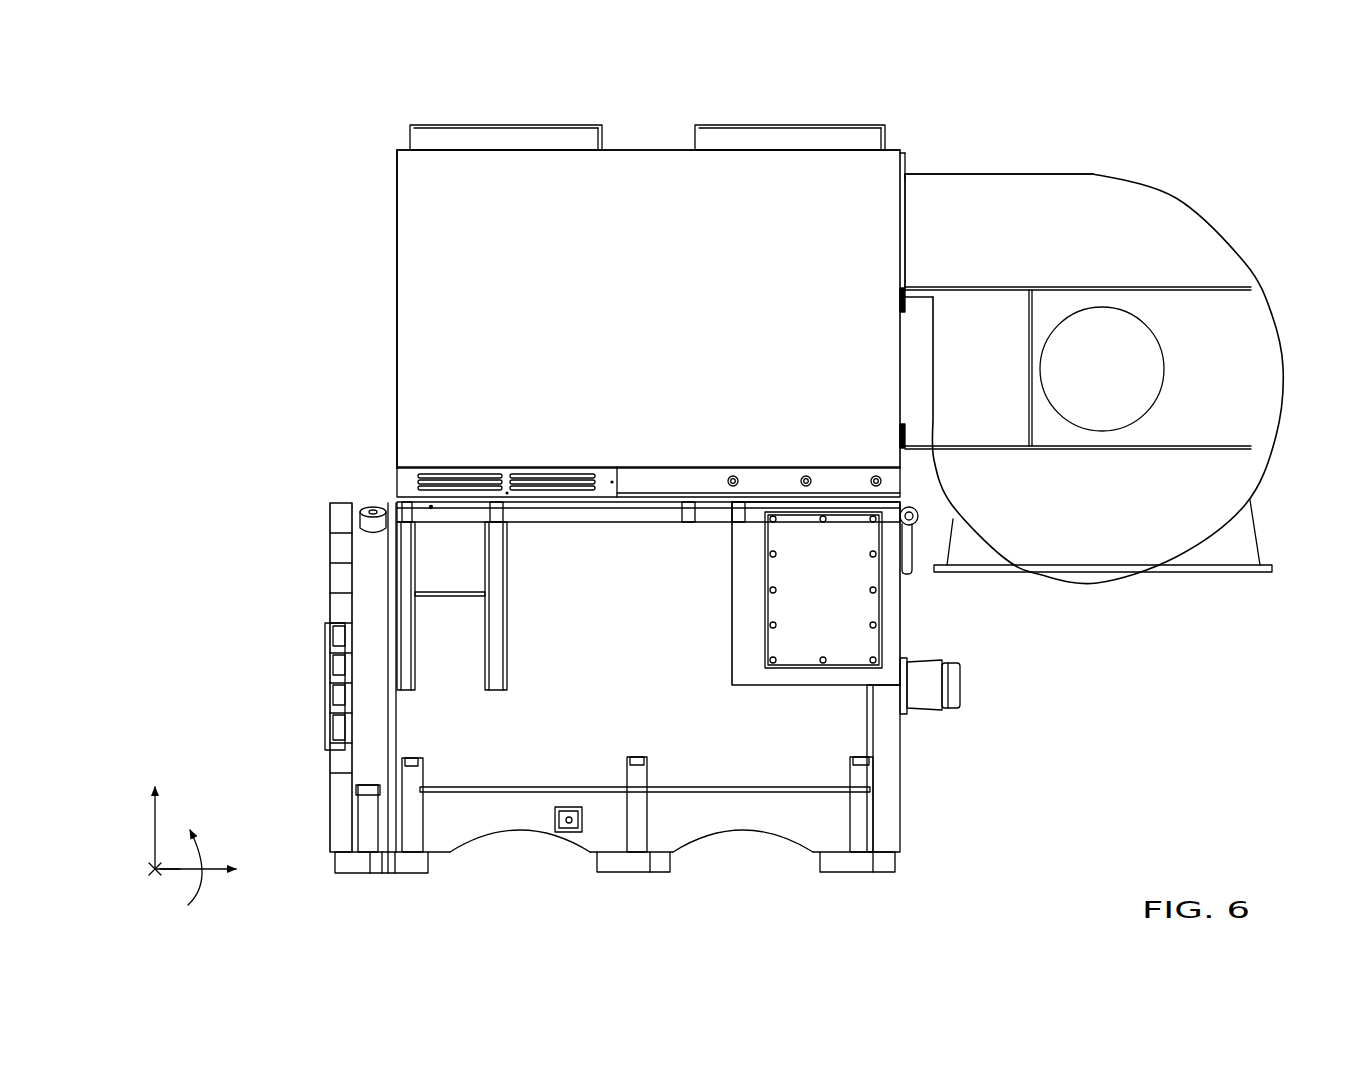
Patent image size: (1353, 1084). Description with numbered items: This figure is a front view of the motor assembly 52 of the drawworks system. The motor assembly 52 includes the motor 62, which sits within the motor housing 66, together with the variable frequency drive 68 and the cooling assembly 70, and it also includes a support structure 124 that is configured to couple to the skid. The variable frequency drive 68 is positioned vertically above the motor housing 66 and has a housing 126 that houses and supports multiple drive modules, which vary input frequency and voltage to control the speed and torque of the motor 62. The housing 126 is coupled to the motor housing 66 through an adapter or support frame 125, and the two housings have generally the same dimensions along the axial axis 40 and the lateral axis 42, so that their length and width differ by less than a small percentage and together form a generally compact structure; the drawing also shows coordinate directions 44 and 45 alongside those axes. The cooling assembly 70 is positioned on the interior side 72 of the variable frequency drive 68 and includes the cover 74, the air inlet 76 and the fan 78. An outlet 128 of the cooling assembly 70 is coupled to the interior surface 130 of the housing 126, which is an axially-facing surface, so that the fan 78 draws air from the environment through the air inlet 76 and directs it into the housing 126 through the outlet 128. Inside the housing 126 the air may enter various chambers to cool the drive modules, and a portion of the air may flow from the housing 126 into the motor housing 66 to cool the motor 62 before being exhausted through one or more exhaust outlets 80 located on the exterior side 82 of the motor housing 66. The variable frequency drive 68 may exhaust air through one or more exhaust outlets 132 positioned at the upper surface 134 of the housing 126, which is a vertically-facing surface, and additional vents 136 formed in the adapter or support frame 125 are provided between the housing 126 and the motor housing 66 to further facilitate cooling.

The axial axis 40 is at (175, 872).
The lateral axis 42 is at (150, 870).
The lateral direction 44 is at (210, 893).
The vertical direction 45 is at (153, 833).
The motor assembly 52 is at (1105, 101).
The motor 62 is at (925, 770).
The motor housing 66 is at (768, 747).
The variable frequency drive 68 is at (420, 248).
The cooling assembly 70 is at (1182, 146).
The interior side 72 is at (1052, 163).
The cover 74 is at (1241, 541).
The air inlet 76 is at (1172, 602).
The fan 78 is at (1152, 222).
The exhaust outlets 80 is at (343, 517).
The exterior side 82 is at (300, 550).
The support structure 124 is at (623, 865).
The adapter or support frame 125 is at (400, 482).
The housing 126 is at (420, 293).
The outlet 128 is at (907, 174).
The interior surface 130 is at (905, 152).
The exhaust outlets 132 is at (790, 123).
The upper surface 134 is at (653, 150).
The additional vents 136 is at (460, 477).